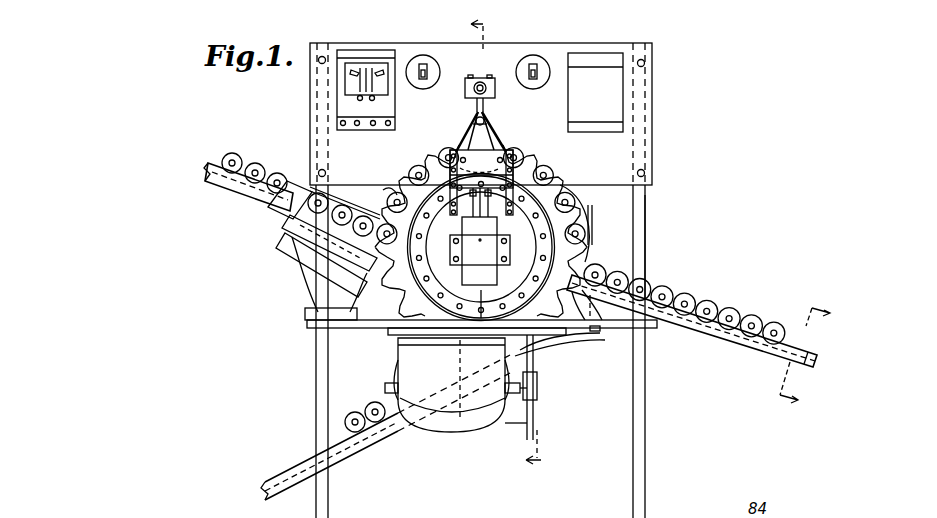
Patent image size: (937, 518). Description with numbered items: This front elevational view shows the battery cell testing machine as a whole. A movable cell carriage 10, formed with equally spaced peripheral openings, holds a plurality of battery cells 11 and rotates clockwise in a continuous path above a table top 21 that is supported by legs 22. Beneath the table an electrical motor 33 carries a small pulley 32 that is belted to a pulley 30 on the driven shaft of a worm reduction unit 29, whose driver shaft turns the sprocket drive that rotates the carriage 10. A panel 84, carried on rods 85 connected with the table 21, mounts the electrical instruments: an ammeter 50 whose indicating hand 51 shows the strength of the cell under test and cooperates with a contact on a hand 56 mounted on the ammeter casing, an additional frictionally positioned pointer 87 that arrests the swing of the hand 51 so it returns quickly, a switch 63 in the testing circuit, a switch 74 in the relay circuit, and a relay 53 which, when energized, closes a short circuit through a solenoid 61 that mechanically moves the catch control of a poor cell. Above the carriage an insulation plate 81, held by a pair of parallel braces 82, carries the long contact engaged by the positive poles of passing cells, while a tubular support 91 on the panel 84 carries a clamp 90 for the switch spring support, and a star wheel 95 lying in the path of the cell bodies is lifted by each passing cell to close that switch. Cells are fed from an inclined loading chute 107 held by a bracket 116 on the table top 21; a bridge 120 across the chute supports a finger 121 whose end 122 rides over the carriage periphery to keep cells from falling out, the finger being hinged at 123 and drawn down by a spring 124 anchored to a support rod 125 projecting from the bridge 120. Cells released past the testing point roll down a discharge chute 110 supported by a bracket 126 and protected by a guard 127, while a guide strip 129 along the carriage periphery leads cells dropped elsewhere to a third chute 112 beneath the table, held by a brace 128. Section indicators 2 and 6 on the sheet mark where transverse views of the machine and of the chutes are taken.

The section line 2- 2 is at (514, 243).
The section line 6- 6 is at (793, 345).
The movable cell carriage 10 is at (398, 296).
The battery cells 11 is at (551, 175).
The table top 21 is at (310, 323).
The legs 22 is at (314, 396).
The worm reduction unit 29 is at (513, 424).
The pulley 30 is at (535, 429).
The small pulley 32 is at (537, 390).
The electrical motor 33 is at (398, 352).
The ammeter 50 is at (356, 51).
The indicating hand 51 is at (376, 82).
The relay 53 is at (598, 56).
The hand 56 is at (358, 82).
The solenoid 61 is at (470, 270).
The switch 63 is at (431, 56).
The switch 74 is at (534, 55).
The insulation plate 81 is at (500, 150).
The parallel braces 82 is at (454, 216).
The panel 84 is at (568, 50).
The rods 85 is at (650, 219).
The additional pointer 87 is at (378, 66).
The clamp 90 is at (495, 88).
The tubular support 91 is at (481, 87).
The star wheel 95 is at (486, 122).
The loading chute 107 is at (252, 195).
The discharge chute 110 is at (770, 336).
The third chute 112 is at (340, 460).
The bracket 116 is at (310, 278).
The bridge 120 is at (297, 172).
The finger 121 is at (354, 206).
The end of finger 122 is at (384, 190).
The hinge connection 123 is at (345, 190).
The spring 124 is at (396, 290).
The support rod 125 is at (284, 231).
The bracket 126 is at (620, 334).
The guard 127 is at (589, 199).
The brace 128 is at (598, 343).
The guide strip 129 is at (566, 353).